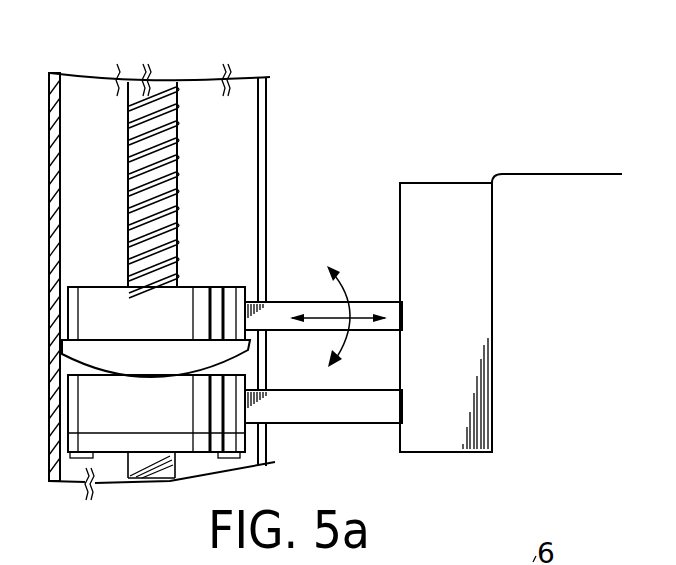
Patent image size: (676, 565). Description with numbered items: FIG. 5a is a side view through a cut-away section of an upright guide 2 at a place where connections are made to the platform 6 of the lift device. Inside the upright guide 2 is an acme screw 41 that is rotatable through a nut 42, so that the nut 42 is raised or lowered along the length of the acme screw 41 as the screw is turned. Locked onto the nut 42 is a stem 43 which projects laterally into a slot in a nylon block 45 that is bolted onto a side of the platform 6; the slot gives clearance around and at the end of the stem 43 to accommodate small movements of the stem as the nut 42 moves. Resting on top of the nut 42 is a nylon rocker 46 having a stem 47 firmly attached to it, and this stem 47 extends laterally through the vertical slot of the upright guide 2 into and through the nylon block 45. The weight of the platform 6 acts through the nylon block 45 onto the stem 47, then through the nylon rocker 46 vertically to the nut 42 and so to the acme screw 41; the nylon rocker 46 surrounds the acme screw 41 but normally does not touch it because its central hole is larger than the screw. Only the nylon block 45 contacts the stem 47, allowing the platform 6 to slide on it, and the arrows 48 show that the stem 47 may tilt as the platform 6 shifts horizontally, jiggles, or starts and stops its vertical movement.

The upright guide 2 is at (49, 248).
The platform 6 is at (508, 173).
The acme screw 41 is at (128, 150).
The nut 42 is at (150, 424).
The stem 43 is at (330, 424).
The nylon block 45 is at (450, 276).
The nylon rocker 46 is at (150, 336).
The stem 47 is at (281, 305).
The arrows 48 is at (338, 336).